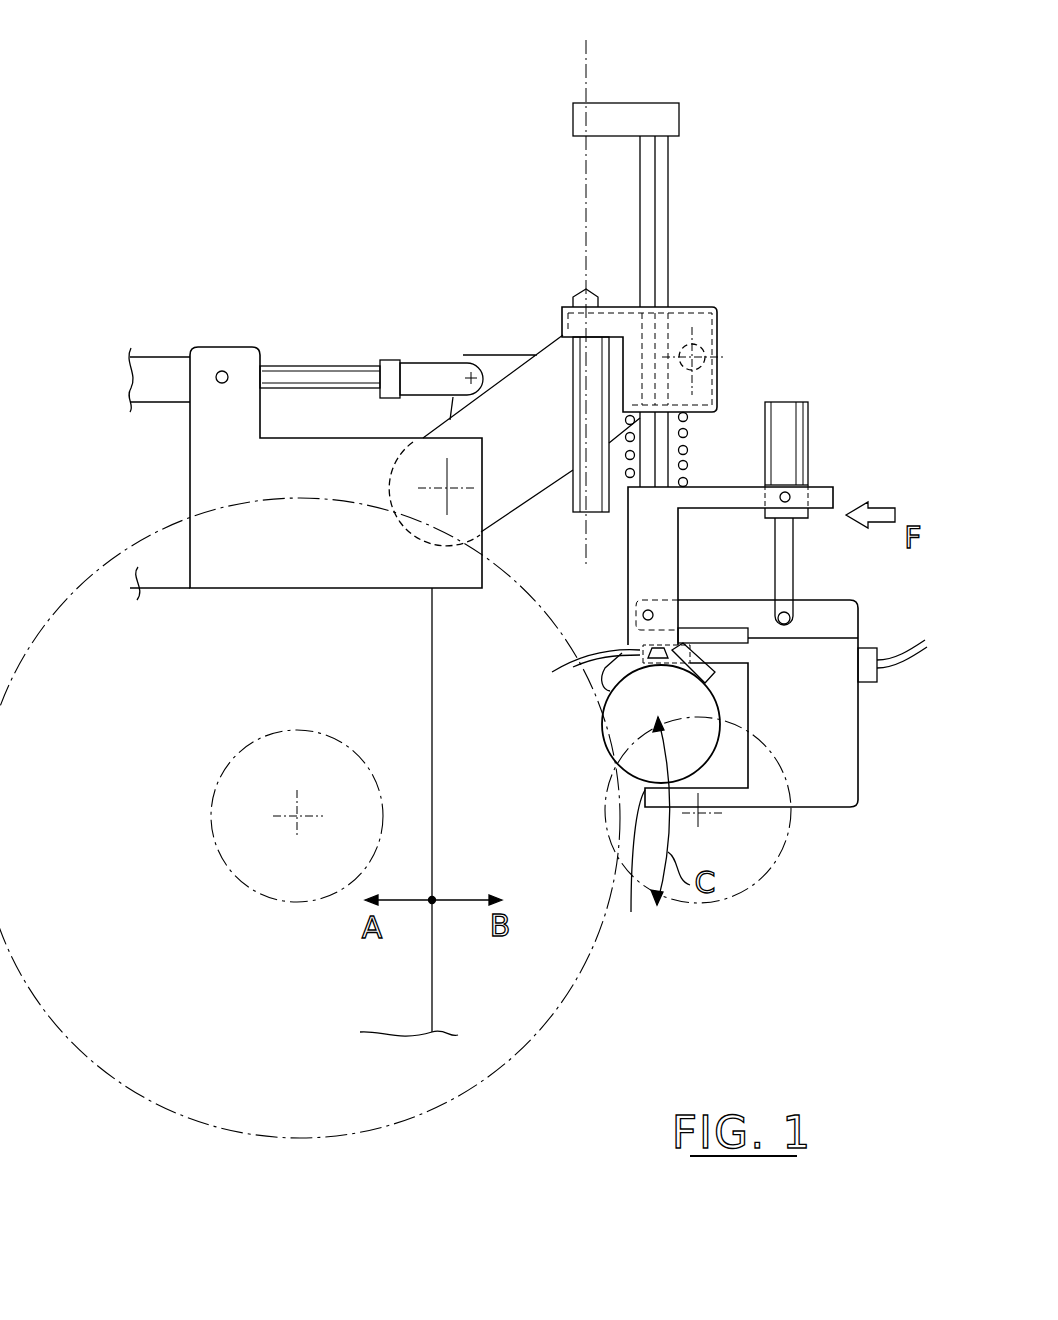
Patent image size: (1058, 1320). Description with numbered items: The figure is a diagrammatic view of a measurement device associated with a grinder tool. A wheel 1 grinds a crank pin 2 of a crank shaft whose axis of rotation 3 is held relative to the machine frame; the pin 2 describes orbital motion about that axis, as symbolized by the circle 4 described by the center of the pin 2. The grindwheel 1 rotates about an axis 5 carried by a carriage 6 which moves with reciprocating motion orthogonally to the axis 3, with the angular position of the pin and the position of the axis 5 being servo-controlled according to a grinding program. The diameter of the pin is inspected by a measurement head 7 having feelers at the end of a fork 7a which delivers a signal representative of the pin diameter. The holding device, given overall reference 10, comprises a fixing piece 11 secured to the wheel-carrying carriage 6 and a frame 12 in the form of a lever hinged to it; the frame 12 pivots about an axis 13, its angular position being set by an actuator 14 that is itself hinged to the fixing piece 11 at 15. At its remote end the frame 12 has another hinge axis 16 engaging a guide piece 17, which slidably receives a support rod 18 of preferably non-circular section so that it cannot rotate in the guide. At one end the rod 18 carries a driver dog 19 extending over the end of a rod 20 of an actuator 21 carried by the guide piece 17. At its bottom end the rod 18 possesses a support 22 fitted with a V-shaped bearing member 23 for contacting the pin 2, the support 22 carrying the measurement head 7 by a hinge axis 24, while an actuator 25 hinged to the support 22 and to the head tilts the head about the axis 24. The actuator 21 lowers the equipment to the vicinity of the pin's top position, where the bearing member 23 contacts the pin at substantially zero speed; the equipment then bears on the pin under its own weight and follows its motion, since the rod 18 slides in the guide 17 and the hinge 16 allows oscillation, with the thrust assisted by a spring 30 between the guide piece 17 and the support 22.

The wheel 1 is at (553, 565).
The crank pin 2 is at (720, 695).
The axis of rotation 3 is at (700, 815).
The circle 4 is at (790, 833).
The axis 5 is at (298, 815).
The carriage 6 is at (433, 775).
The measurement head 7 is at (833, 767).
The fork 7a is at (625, 869).
The device 10 is at (713, 443).
The fixing piece 11 is at (208, 478).
The frame 12 is at (513, 383).
The axis 13 is at (450, 483).
The actuator 14 is at (158, 367).
The hinge 15 is at (222, 370).
The hinge axis 16 is at (712, 330).
The guide piece 17 is at (683, 320).
The support rod 18 is at (658, 210).
The driver dog 19 is at (622, 120).
The rod 20 is at (575, 298).
The actuator 21 is at (577, 493).
The support 22 is at (660, 552).
The bearing member 23 is at (608, 673).
The hinge axis 24 is at (642, 613).
The actuator 25 is at (787, 433).
The spring 30 is at (683, 463).